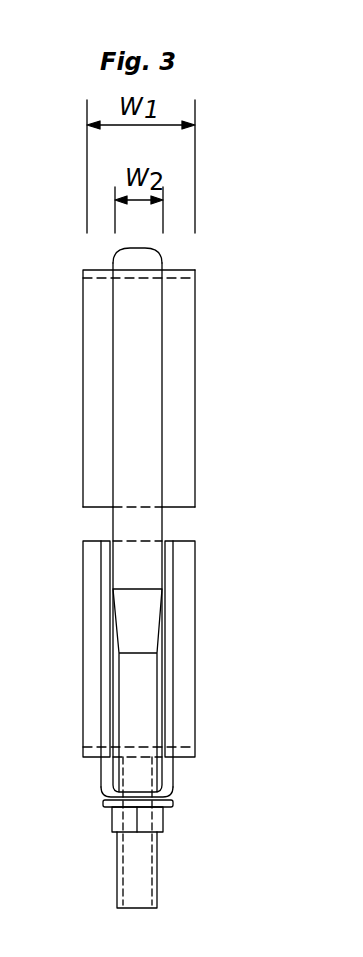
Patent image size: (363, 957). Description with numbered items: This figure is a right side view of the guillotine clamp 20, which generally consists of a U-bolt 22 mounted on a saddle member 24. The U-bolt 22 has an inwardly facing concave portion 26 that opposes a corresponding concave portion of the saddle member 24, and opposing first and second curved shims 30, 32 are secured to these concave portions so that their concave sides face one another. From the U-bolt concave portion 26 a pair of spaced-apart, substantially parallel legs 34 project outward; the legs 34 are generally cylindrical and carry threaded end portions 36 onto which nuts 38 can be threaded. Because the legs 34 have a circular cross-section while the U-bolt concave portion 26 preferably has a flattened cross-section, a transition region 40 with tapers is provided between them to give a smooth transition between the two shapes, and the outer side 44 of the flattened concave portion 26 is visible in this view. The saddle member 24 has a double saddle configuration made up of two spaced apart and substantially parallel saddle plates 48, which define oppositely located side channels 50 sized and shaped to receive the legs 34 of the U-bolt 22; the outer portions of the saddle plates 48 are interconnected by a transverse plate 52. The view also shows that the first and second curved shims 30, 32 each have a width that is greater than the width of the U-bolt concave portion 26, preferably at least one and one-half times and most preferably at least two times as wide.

The clamp 20 is at (250, 388).
The U-bolt 22 is at (102, 418).
The saddle member 24 is at (184, 785).
The U-bolt concave portion 26 is at (113, 330).
The first curved shim 30 is at (195, 475).
The second curved shim 32 is at (83, 562).
The legs 34 is at (157, 873).
The threaded end portions 36 is at (117, 868).
The nuts 38 is at (112, 815).
The transition region 40 is at (150, 627).
The outer side 44 is at (145, 325).
The saddle plates 48 is at (173, 712).
The side channels 50 is at (138, 736).
The transverse plate 52 is at (158, 813).